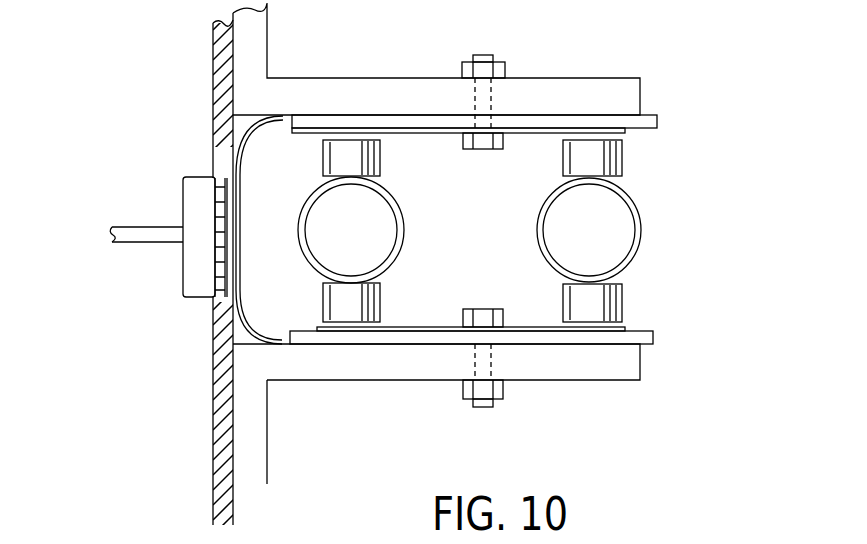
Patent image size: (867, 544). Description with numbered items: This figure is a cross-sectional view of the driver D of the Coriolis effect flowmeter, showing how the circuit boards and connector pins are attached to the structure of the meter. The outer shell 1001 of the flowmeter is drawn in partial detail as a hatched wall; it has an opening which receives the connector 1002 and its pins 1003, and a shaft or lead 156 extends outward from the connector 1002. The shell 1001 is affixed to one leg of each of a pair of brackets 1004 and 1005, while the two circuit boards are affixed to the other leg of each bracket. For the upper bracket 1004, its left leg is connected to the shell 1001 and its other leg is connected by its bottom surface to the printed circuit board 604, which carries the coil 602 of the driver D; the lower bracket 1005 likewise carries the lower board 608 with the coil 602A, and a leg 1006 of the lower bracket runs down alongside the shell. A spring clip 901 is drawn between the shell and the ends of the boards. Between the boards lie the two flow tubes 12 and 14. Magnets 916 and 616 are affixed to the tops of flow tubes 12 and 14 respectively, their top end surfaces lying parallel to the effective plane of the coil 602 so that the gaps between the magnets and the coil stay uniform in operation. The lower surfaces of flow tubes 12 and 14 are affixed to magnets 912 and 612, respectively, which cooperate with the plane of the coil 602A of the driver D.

The outer shell 1001 is at (213, 58).
The connector 1002 is at (190, 200).
The shaft 156 is at (162, 247).
The pins 1003 is at (213, 302).
The bracket 1004 is at (587, 88).
The bracket 1005 is at (378, 362).
The bracket leg 1006 is at (245, 472).
The printed circuit board 604 is at (660, 118).
The coil 602 is at (420, 133).
The lower plate 608 is at (655, 335).
The coil 602A is at (425, 327).
The spring clip 901 is at (250, 135).
The flow tube 12 is at (364, 243).
The flow tube 14 is at (606, 243).
The magnet 916 is at (380, 165).
The magnet 912 is at (337, 298).
The magnet 616 is at (622, 152).
The magnet 612 is at (622, 304).
The driver D is at (378, 82).